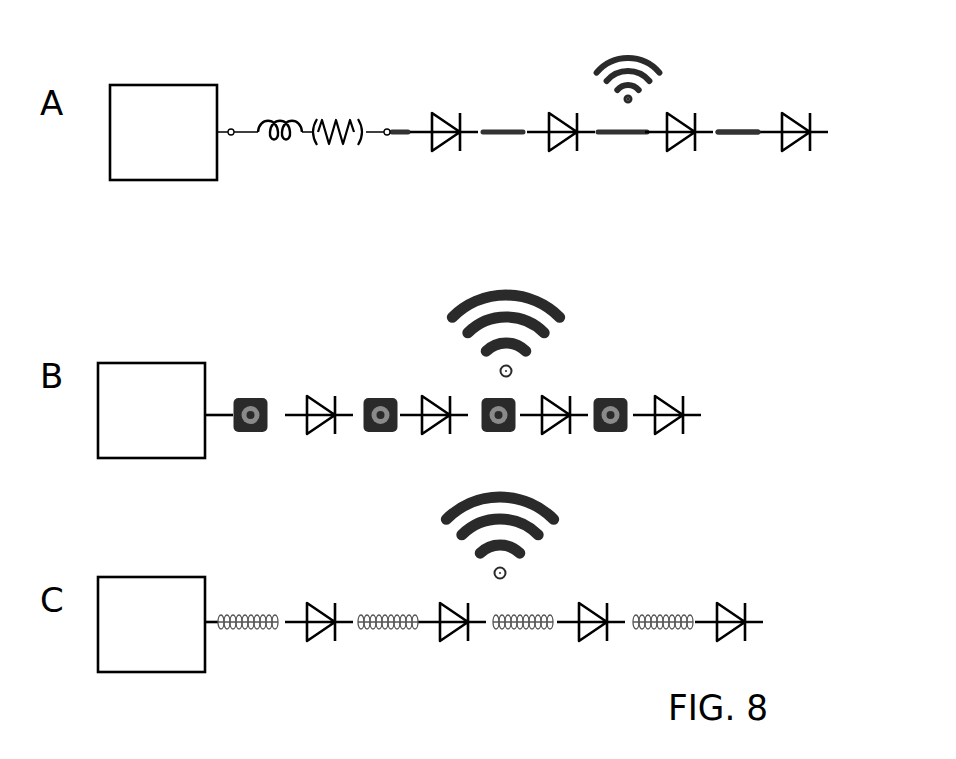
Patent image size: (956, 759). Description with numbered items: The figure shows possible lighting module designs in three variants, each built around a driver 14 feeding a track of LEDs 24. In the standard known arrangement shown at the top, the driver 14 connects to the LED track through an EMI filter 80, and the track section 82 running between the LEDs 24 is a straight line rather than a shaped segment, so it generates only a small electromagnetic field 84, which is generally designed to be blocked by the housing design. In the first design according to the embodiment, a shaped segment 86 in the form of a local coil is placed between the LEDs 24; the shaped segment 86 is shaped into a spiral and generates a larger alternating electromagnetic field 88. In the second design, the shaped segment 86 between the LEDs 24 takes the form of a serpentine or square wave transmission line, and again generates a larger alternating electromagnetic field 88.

The driver 14 is at (152, 181).
The LED 24 is at (548, 152).
The EMI filter 80 is at (283, 142).
The track section 82 is at (742, 130).
The small electromagnetic field 84 is at (598, 70).
The shaped segment 86 is at (378, 398).
The larger alternating electromagnetic field 88 is at (563, 313).